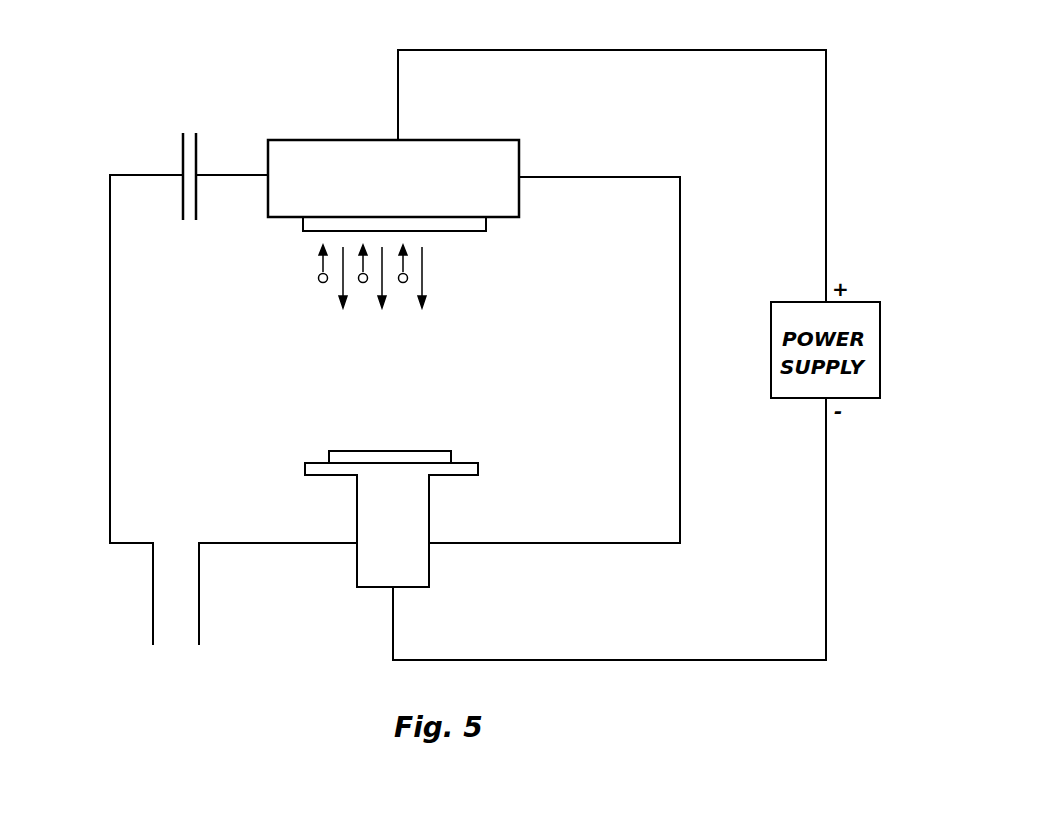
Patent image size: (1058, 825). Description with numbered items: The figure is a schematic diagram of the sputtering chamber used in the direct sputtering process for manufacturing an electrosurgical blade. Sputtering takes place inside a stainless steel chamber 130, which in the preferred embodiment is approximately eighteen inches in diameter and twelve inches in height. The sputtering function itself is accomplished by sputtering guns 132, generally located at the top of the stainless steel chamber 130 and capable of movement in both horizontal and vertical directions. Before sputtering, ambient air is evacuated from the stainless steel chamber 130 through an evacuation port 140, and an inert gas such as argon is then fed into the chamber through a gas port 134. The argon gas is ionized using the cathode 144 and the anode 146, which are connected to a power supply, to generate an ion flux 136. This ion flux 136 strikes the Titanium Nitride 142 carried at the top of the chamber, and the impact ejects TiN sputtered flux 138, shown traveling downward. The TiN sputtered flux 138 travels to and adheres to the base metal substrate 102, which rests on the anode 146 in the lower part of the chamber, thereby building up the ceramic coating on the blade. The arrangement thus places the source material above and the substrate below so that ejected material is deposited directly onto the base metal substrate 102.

The base metal substrate 102 is at (433, 451).
The stainless steel chamber 130 is at (110, 272).
The sputtering guns 132 is at (519, 202).
The gas port 134 is at (188, 143).
The ion flux 136 is at (319, 282).
The TiN sputtered flux 138 is at (422, 279).
The evacuation port 140 is at (168, 598).
The Titanium Nitride 142 is at (466, 231).
The cathode 144 is at (490, 140).
The anode 146 is at (391, 525).